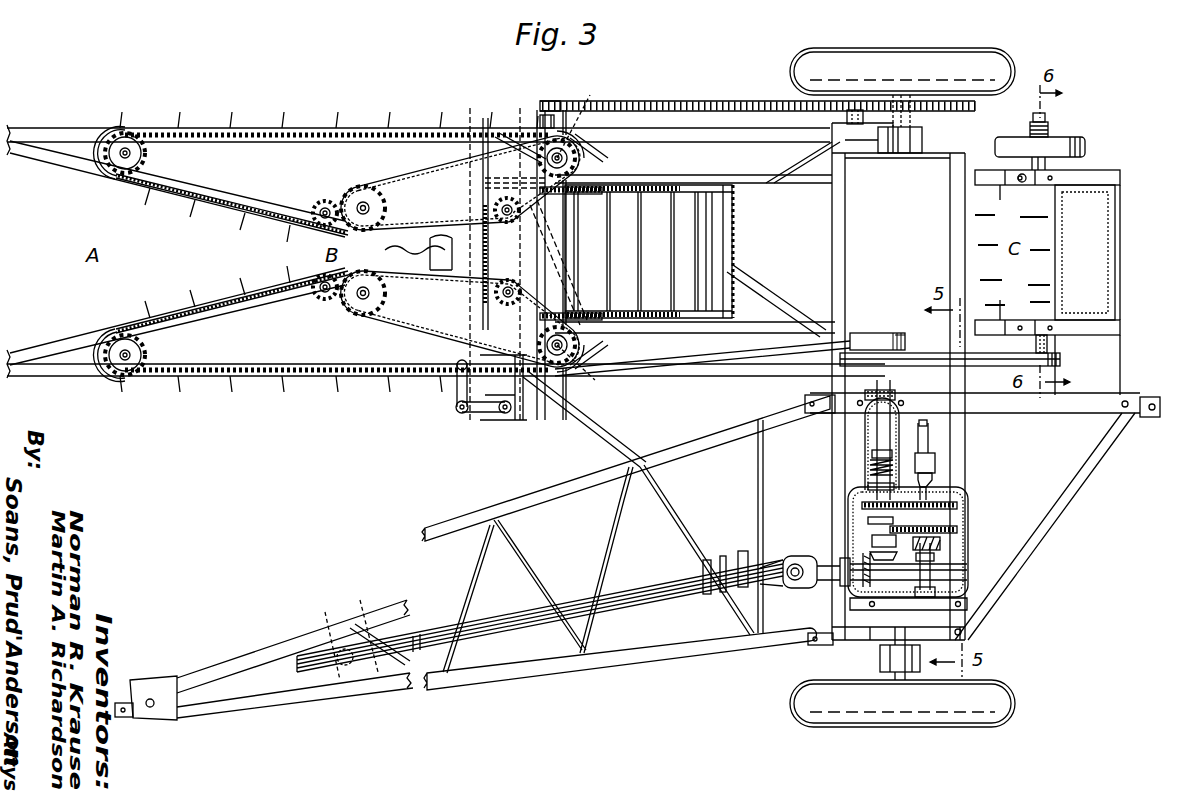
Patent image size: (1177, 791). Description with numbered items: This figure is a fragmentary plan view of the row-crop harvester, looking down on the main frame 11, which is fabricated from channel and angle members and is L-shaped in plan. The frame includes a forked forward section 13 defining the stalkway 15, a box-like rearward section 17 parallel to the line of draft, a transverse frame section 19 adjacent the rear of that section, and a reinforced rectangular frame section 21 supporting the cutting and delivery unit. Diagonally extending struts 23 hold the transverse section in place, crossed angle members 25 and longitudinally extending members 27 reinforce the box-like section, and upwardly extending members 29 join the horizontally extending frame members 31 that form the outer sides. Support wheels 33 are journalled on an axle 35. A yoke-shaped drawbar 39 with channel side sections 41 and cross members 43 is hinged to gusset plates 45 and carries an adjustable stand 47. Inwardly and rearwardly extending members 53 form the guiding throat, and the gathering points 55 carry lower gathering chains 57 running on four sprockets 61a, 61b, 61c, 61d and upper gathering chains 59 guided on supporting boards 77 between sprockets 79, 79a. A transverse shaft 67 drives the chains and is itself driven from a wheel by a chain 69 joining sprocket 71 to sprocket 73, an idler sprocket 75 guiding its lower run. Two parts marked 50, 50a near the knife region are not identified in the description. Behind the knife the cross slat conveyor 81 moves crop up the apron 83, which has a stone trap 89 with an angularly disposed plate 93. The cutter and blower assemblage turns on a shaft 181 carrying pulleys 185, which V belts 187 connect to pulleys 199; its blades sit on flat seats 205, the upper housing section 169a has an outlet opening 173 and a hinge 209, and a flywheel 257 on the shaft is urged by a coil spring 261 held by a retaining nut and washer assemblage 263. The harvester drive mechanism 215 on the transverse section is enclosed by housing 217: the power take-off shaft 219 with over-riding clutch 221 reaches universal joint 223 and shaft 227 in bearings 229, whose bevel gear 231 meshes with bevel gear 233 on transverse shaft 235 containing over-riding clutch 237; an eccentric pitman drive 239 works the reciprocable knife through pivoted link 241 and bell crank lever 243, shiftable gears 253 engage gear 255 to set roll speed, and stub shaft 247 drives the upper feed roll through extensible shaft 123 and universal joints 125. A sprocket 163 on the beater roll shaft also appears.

The main frame 11 is at (795, 248).
The forked forward section 13 is at (215, 214).
The stalkway 15 is at (294, 249).
The box-like rearward section 17 is at (690, 140).
The transverse frame section 19 is at (831, 457).
The rectangularly shaped frame section 21 is at (1080, 169).
The diagonally extending struts 23 is at (1076, 490).
The crossed angle members 25 is at (760, 202).
The longitudinally extending members 27 is at (776, 172).
The upwardly extending members 29 is at (586, 434).
The horizontally extending frame members 31 is at (272, 129).
The support wheels 33 is at (955, 70).
The axle 35 is at (866, 117).
The drawbar 39 is at (478, 480).
The channel side sections 41 is at (536, 492).
The cross members 43 is at (605, 540).
The gusset plates 45 is at (824, 412).
The adjustable stand 47 is at (345, 665).
The shaft 50 is at (451, 240).
The shaft 50a is at (453, 208).
The inwardly and rearwardly extending members 53 is at (258, 222).
The gathering points 55 is at (175, 190).
The lower gathering chains 57 is at (355, 128).
The upper gathering chains 59 is at (395, 175).
The forwardmost sprocket 61a is at (138, 135).
The idler and guide sprocket 61b is at (319, 210).
The guide sprocket 61c is at (515, 218).
The driving sprocket 61d is at (587, 235).
The transversely extending shaft 67 is at (540, 118).
The chain 69 is at (665, 100).
The sprocket 71 is at (970, 98).
The sprocket 73 is at (546, 101).
The idler sprocket 75 is at (838, 118).
The supporting board 77 is at (452, 170).
The sprocket 79 is at (358, 202).
The sprocket 79a is at (587, 148).
The cross slat conveyor 81 is at (652, 245).
The apron 83 is at (628, 247).
The trap 89 is at (736, 244).
The angularly disposed plate 93 is at (714, 233).
The extensible shaft 123 is at (938, 457).
The universal joints 125 is at (943, 461).
The sprocket 163 is at (1015, 186).
The upper section of housing 169a is at (1005, 206).
The outlet opening 173 is at (1103, 220).
The shaft 181 is at (1048, 344).
The pulleys 185 is at (1061, 360).
The V belts 187 is at (1028, 353).
The pulleys 199 is at (813, 389).
The flat seats 205 is at (720, 358).
The hinge 209 is at (933, 431).
The harvester drive mechanism 215 is at (961, 548).
The housing 217 is at (953, 530).
The power take-off shaft 219 is at (632, 603).
The over-riding clutch 221 is at (717, 599).
The universal joint 223 is at (800, 550).
The longitudinally extending shaft 227 is at (901, 606).
The bearings 229 is at (848, 570).
The bevel gear 231 is at (888, 610).
The bevel gear 233 is at (866, 557).
The transversely extending shaft 235 is at (878, 428).
The over-riding clutch 237 is at (873, 460).
The eccentric pitman drive 239 is at (910, 332).
The pivoted link 241 is at (460, 396).
The bell crank lever 243 is at (492, 414).
The stub shaft 247 is at (948, 506).
The gears 253 is at (867, 517).
The gear 255 is at (963, 536).
The flywheel 257 is at (1086, 142).
The coil spring 261 is at (1050, 126).
The retaining nut and washer assemblage 263 is at (1048, 115).